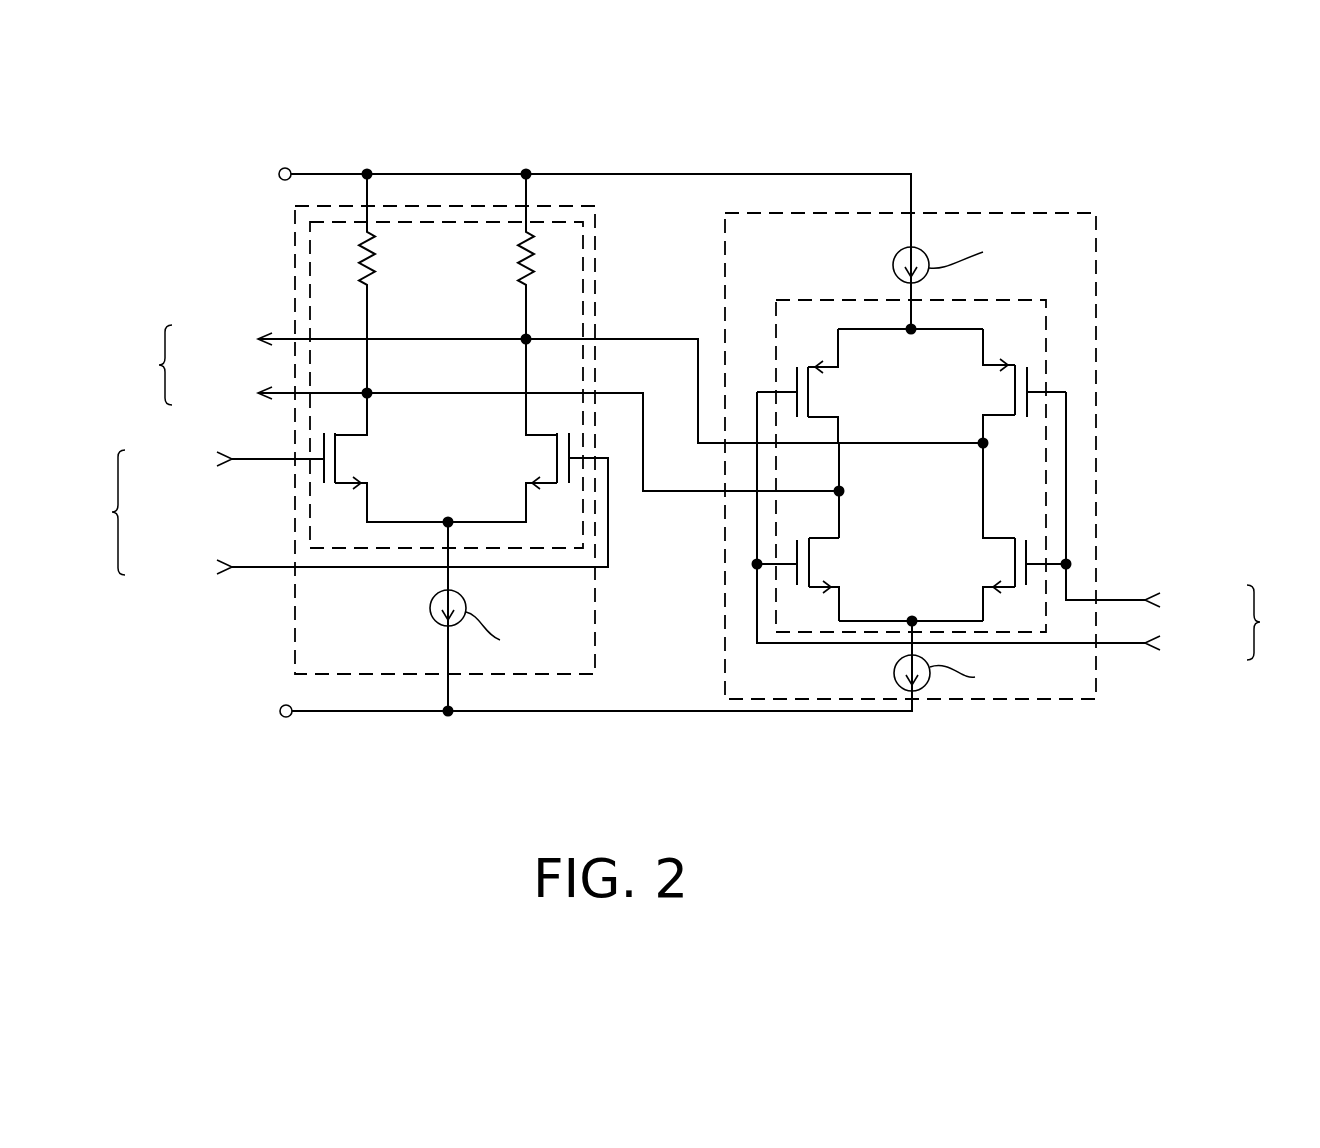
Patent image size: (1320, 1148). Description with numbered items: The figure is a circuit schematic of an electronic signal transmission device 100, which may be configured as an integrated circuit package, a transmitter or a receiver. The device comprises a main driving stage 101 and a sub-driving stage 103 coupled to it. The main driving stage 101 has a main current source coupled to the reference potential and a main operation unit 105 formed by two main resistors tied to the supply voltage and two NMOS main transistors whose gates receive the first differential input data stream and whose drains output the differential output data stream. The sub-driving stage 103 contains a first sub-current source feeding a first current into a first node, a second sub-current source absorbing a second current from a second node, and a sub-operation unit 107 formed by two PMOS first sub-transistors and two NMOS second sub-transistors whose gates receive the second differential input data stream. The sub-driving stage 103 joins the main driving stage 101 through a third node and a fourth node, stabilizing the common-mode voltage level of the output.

The electronic signal transmission device 100 is at (688, 460).
The main driving stage 101 is at (598, 258).
The sub-driving stage 103 is at (1100, 268).
The main operation unit 105 is at (437, 222).
The sub-operation unit 107 is at (1050, 358).